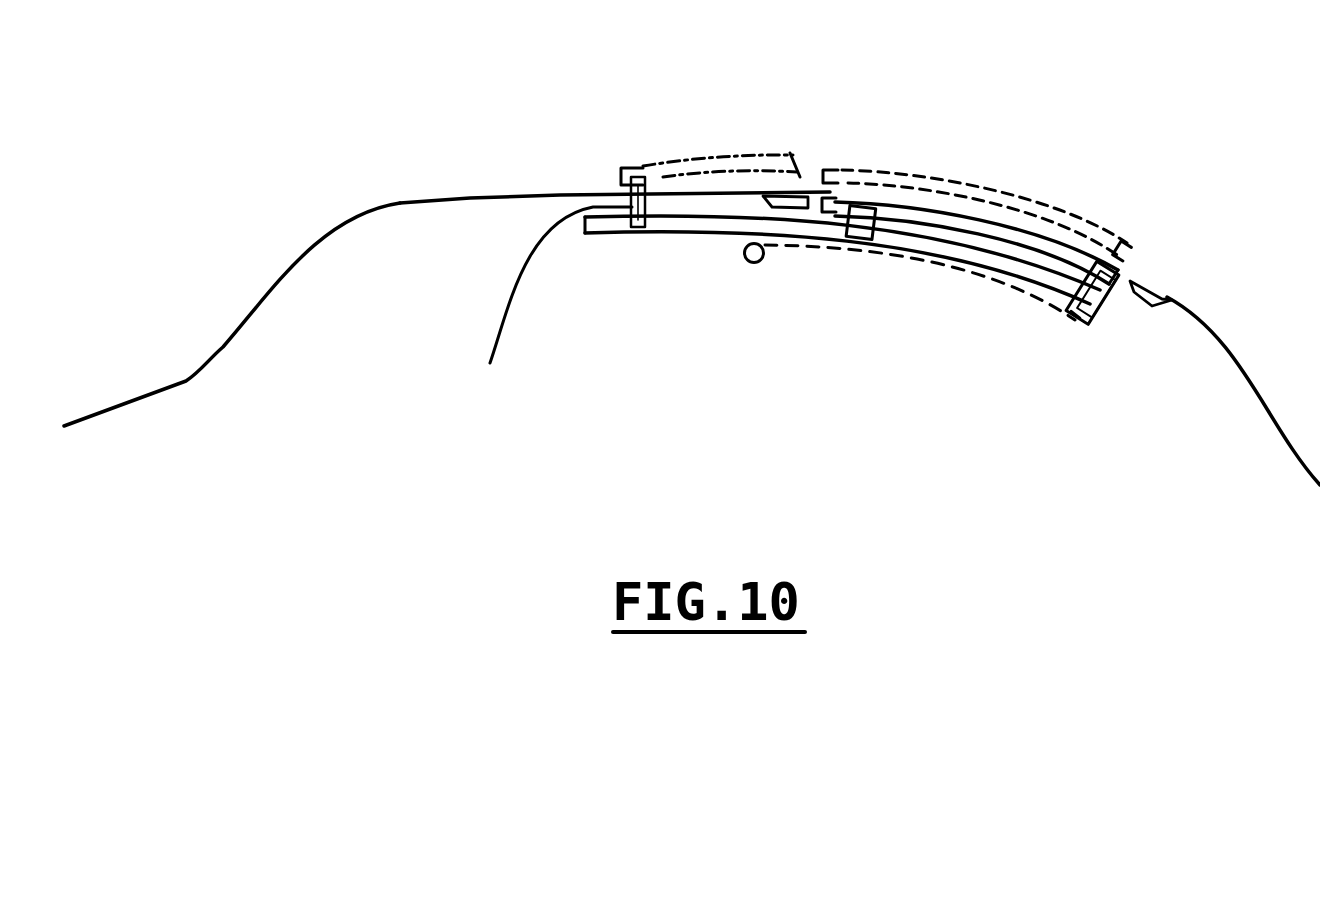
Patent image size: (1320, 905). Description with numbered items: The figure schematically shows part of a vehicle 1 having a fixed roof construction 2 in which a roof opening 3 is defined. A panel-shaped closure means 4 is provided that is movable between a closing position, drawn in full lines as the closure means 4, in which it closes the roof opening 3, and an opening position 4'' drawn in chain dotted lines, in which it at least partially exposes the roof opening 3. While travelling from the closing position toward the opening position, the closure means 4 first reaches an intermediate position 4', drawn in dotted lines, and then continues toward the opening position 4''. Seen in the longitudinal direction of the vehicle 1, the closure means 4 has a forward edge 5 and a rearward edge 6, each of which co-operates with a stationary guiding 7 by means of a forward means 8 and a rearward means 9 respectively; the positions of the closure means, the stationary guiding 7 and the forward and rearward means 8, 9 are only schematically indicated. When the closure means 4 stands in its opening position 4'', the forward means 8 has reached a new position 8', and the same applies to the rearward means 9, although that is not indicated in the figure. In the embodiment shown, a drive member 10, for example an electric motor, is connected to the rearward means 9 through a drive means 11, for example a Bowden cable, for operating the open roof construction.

The vehicle 1 is at (187, 378).
The fixed roof construction 2 is at (471, 198).
The roof opening 3 is at (1125, 280).
The panel-shaped closure means 4 is at (976, 166).
The intermediate position of the closure means 4' is at (984, 153).
The opening position of the closure means 4'' is at (710, 138).
The forward edge 5 is at (833, 207).
The rearward edge 6 is at (1118, 274).
The stationary guiding 7 is at (685, 232).
The forward means 8 is at (861, 307).
The new position of the forward means 8' is at (556, 308).
The rearward means 9 is at (1106, 295).
The drive member 10 is at (756, 263).
The drive means 11 is at (961, 274).